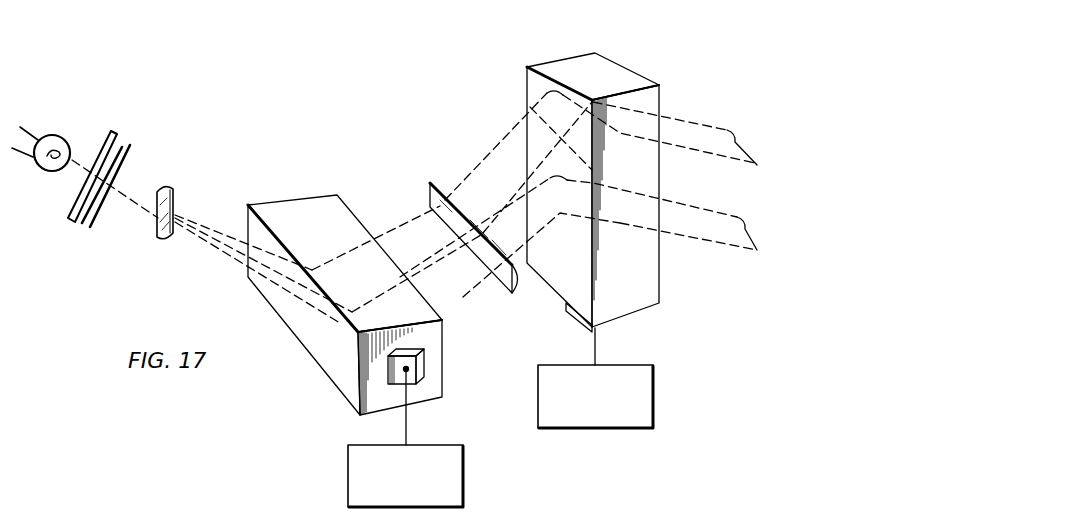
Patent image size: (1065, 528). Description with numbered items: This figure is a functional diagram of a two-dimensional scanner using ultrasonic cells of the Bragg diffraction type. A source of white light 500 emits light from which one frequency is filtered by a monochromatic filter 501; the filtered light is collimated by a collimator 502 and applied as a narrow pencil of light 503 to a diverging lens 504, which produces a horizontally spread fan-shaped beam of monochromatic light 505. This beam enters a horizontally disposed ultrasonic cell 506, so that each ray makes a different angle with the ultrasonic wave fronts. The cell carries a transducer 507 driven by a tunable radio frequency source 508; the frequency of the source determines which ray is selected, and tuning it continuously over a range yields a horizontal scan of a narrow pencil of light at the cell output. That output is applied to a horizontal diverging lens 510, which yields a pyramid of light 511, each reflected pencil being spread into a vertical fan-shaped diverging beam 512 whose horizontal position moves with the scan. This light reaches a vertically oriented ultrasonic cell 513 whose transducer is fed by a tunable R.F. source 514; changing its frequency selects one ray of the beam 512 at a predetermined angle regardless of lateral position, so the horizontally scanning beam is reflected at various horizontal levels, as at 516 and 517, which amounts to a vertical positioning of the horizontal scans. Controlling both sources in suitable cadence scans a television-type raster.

The source of white light 500 is at (52, 135).
The monochromatic filter 501 is at (98, 150).
The collimator 502 is at (123, 147).
The narrow pencil of light 503 is at (130, 197).
The diverging lens 504 is at (174, 200).
The fan-shaped beam of monochromatic light 505 is at (230, 247).
The ultrasonic cell 506 is at (300, 210).
The transducer 507 is at (418, 367).
The tunable radio frequency source 508 is at (433, 447).
The horizontal diverging lens 510 is at (510, 285).
The pyramid of light 511 is at (502, 153).
The vertical fan-shaped diverging beam 512 is at (570, 253).
The vertically oriented ultrasonic cell 513 is at (602, 73).
The tunable R.F. source 514 is at (645, 403).
The reflected beam 516 is at (687, 213).
The reflected beam 517 is at (672, 127).